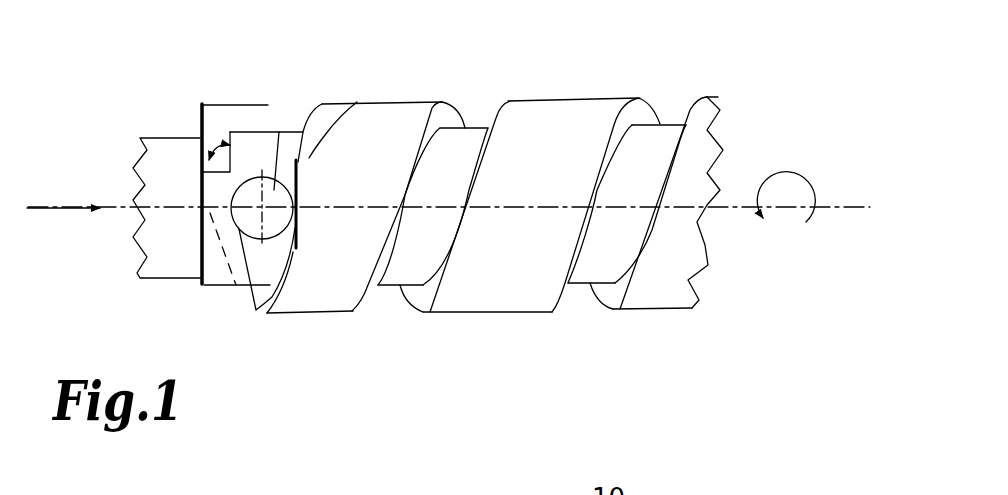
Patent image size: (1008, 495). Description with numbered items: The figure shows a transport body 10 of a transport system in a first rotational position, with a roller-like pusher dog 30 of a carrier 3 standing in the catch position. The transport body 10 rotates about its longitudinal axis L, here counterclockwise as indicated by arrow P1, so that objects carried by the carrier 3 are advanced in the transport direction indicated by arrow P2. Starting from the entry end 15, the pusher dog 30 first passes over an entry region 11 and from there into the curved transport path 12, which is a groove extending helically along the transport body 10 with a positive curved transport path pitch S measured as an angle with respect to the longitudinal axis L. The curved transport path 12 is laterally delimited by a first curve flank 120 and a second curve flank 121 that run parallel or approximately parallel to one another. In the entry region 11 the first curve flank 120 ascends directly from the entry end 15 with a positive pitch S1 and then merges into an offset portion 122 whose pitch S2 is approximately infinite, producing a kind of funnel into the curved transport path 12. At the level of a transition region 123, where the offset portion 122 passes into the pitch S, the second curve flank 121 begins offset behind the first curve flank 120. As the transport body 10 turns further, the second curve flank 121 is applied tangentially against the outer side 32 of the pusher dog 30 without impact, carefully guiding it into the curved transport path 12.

The transport body 10 is at (194, 82).
The entry region 11 is at (221, 270).
The curved transport path 12 is at (307, 113).
The first curve flank 120 is at (258, 305).
The second curve flank 121 is at (243, 166).
The offset portion 122 is at (301, 229).
The transition region 123 is at (306, 160).
The entry end 15 is at (203, 292).
The carrier 3 is at (218, 134).
The roller-like pusher dog 30 is at (271, 193).
The outer side of the roller-like pusher dog 32 is at (230, 170).
The positive curved transport path pitch S is at (479, 168).
The positive pitch of the first curve flank S1 is at (206, 234).
The pitch of the offset portion S2 is at (299, 170).
The direction of rotation P1 is at (788, 176).
The transport direction P2 is at (52, 203).
The longitudinal axis L is at (849, 201).